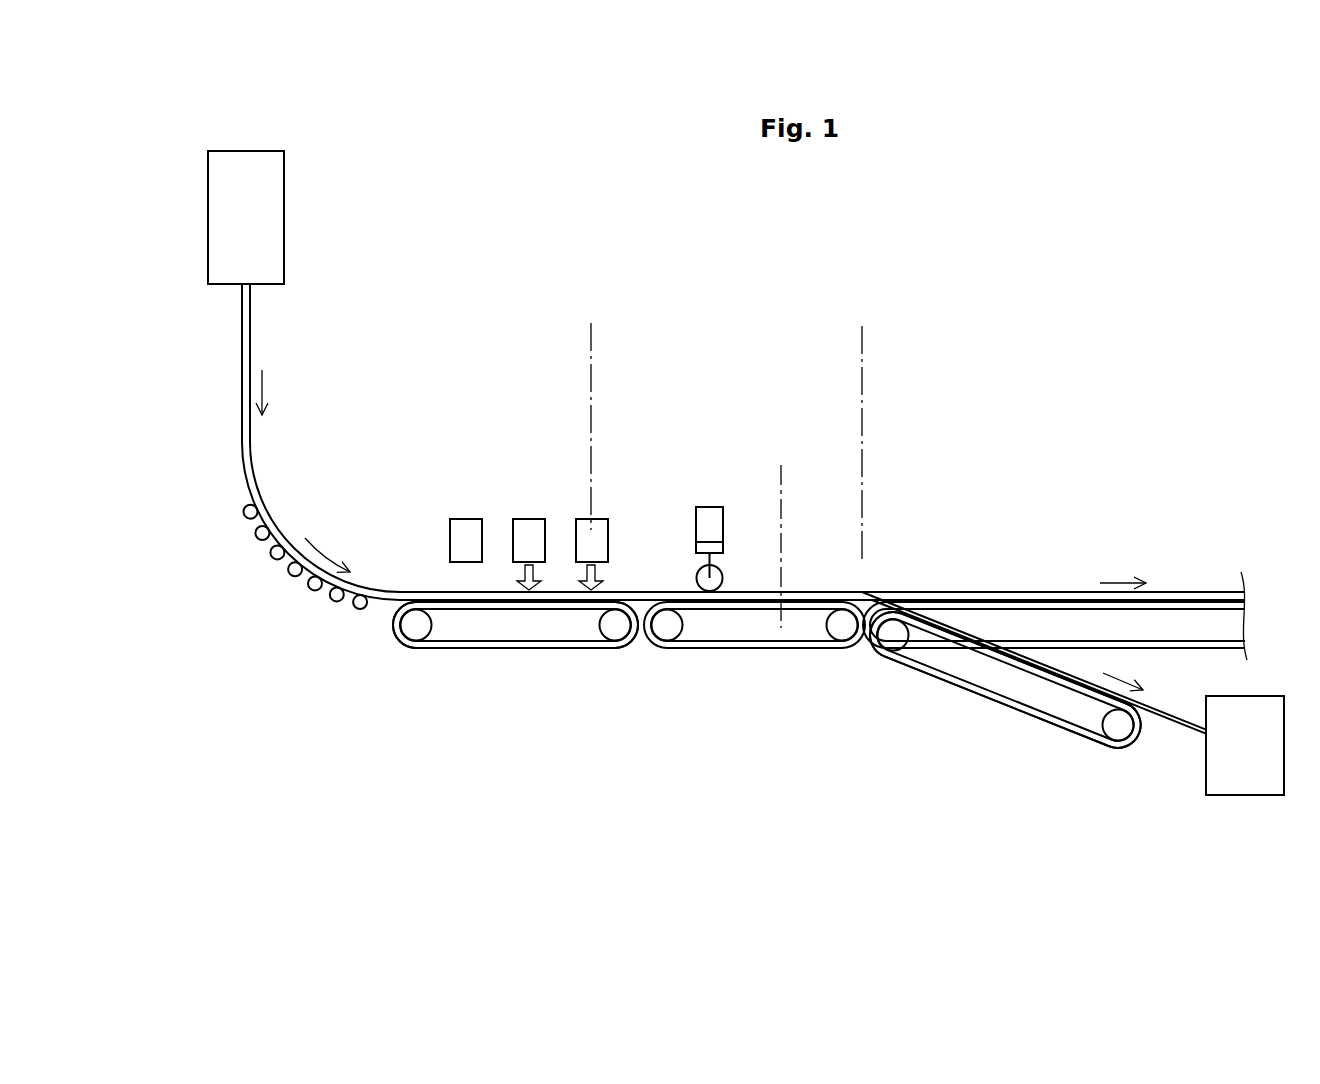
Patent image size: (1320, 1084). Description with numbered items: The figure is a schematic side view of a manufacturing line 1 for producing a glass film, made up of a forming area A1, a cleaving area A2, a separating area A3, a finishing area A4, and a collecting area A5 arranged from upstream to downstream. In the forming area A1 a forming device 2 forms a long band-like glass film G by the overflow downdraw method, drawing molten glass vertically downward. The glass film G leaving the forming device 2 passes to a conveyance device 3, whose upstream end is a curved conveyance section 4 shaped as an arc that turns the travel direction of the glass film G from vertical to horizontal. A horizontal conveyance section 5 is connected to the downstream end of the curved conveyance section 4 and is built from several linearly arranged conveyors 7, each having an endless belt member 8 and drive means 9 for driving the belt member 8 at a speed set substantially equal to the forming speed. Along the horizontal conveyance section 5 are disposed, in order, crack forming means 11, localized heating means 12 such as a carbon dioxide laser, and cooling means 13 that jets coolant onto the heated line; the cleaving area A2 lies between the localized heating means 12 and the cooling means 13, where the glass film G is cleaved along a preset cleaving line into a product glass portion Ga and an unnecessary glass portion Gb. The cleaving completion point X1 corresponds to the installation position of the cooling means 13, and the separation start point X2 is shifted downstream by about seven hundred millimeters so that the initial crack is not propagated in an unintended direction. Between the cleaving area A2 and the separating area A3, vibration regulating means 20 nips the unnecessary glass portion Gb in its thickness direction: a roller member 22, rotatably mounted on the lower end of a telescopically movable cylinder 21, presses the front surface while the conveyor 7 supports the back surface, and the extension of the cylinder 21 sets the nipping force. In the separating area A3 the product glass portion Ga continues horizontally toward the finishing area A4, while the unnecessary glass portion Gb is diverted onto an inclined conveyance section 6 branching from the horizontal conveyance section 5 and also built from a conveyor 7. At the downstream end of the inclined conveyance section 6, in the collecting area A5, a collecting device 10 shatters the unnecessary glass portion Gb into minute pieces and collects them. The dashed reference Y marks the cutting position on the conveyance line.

The manufacturing line 1 is at (1084, 322).
The forming device 2 is at (272, 205).
The conveyance device 3 is at (297, 436).
The curved conveyance section 4 is at (268, 580).
The horizontal conveyance section 5 is at (428, 706).
The inclined conveyance section 6 is at (965, 736).
The conveyor 7 is at (819, 670).
The belt member 8 is at (470, 646).
The drive means 9 is at (614, 631).
The collecting device 10 is at (1250, 779).
The crack forming means 11 is at (466, 532).
The localized heating means 12 is at (523, 530).
The cooling means 13 is at (598, 534).
The vibration regulating means 20 is at (716, 505).
The cylinder 21 is at (700, 521).
The roller member 22 is at (723, 578).
The forming area A1 is at (185, 218).
The cleaving area A2 is at (564, 562).
The separating area A3 is at (875, 575).
The finishing area A4 is at (1291, 582).
The collecting area A5 is at (1195, 820).
The glass film G is at (256, 490).
The product glass portion Ga is at (1005, 598).
The unnecessary glass portion Gb is at (646, 598).
The cleaving completion point X1 is at (596, 411).
The separation start point X2 is at (867, 426).
The cutting line Y is at (781, 473).